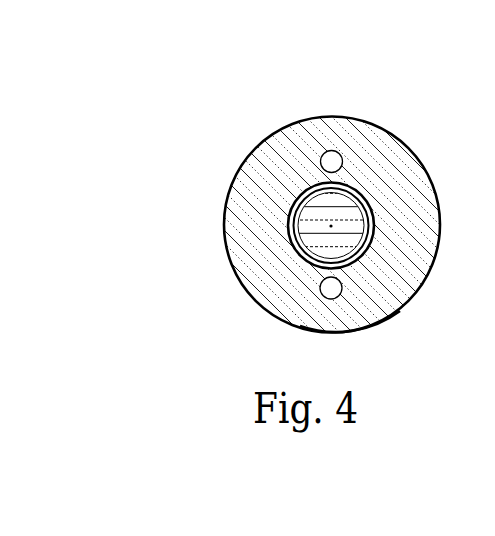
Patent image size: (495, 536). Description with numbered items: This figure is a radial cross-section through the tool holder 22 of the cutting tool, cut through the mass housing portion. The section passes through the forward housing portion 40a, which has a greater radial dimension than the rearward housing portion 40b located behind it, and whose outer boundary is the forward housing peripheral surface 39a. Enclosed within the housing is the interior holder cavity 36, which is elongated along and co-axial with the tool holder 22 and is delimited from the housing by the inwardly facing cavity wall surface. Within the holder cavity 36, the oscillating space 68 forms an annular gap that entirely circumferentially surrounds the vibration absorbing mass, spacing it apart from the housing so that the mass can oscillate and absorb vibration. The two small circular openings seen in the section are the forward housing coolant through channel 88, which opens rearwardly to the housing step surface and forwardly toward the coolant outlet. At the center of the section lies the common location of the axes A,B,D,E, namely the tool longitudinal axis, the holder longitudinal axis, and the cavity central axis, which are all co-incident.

The tool holder 22 is at (247, 268).
The forward housing portion 40a is at (247, 268).
The rearward housing portion 40b is at (192, 217).
The interior holder cavity 36 is at (288, 246).
The oscillating space 68 is at (363, 258).
The forward housing coolant through channel 88 is at (339, 290).
The forward housing peripheral surface 39a is at (358, 330).
The tool longitudinal axis, holder longitudinal axis, cavity central axis A,B,D,E is at (332, 225).